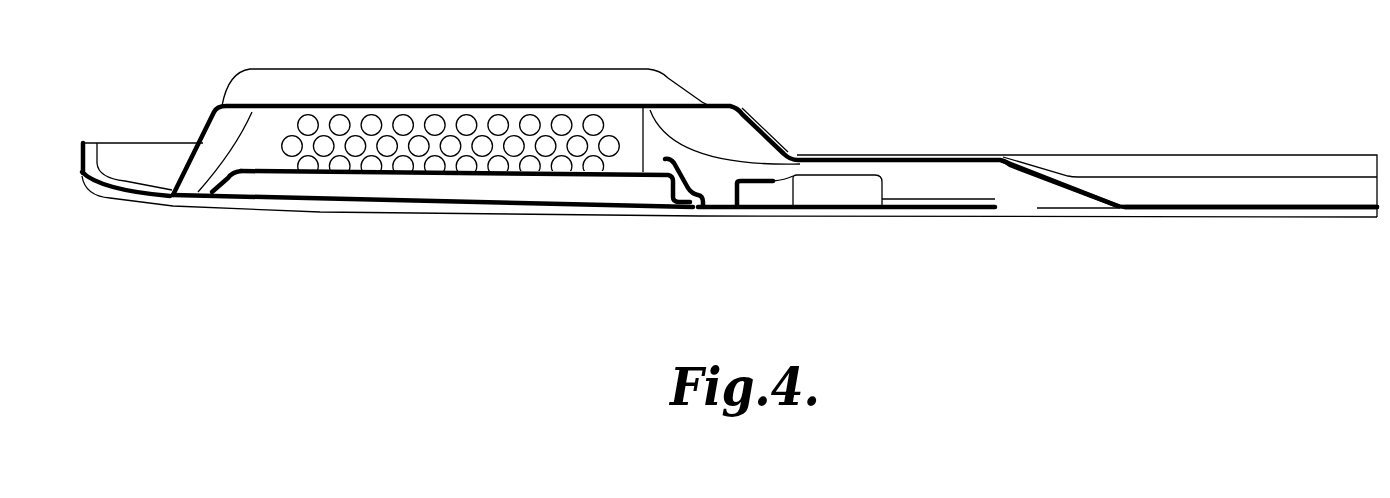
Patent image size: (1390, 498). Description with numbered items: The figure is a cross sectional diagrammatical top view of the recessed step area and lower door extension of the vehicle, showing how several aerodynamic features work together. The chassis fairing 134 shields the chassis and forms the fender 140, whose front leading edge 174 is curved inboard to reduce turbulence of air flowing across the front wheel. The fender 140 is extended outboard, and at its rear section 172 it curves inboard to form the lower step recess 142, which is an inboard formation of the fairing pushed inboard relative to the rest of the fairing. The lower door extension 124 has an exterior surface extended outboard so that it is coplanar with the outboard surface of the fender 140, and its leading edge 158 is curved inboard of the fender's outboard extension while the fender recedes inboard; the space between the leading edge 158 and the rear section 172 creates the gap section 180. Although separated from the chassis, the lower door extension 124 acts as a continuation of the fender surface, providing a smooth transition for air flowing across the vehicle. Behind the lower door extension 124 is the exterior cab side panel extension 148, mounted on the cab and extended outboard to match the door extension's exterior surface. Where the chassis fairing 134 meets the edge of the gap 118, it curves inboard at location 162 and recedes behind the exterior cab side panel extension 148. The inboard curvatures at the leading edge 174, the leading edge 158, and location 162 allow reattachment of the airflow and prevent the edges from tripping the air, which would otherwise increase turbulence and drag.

The front leading edge 174 is at (82, 145).
The fender portion 140 is at (147, 143).
The rear section 172 is at (203, 140).
The recess 142 is at (266, 150).
The gap section 180 is at (181, 193).
The leading edge 158 is at (216, 195).
The lower door extension 124 is at (459, 204).
The exterior cab side panel extension 148 is at (834, 206).
The location of inboard curvature 162 is at (1063, 185).
The gap 118 is at (1026, 205).
The chassis fairing 134 is at (1117, 209).